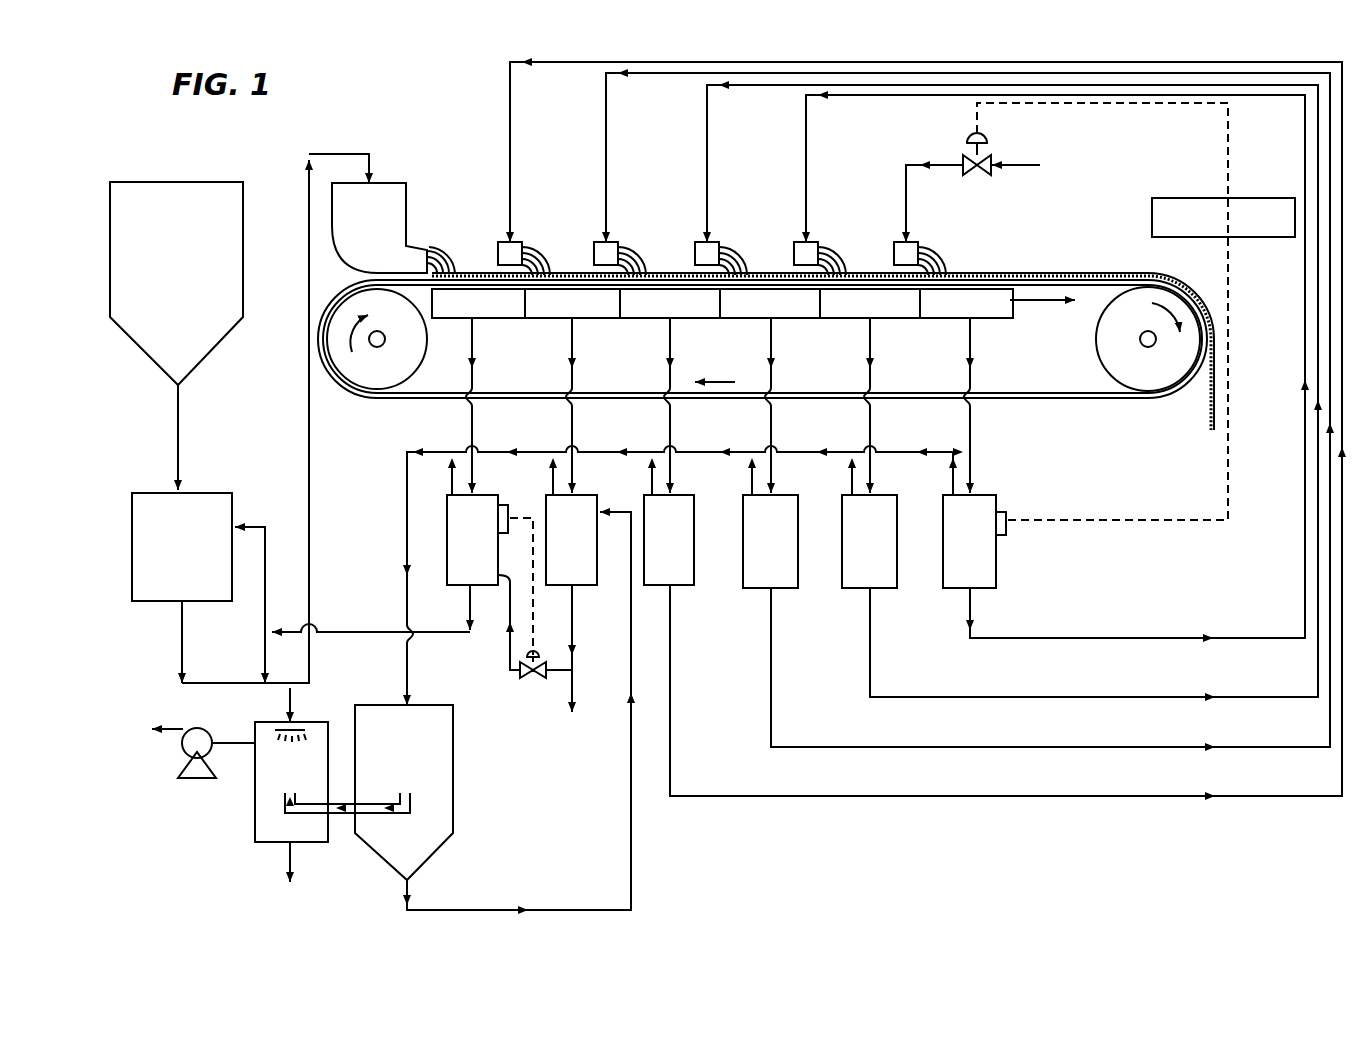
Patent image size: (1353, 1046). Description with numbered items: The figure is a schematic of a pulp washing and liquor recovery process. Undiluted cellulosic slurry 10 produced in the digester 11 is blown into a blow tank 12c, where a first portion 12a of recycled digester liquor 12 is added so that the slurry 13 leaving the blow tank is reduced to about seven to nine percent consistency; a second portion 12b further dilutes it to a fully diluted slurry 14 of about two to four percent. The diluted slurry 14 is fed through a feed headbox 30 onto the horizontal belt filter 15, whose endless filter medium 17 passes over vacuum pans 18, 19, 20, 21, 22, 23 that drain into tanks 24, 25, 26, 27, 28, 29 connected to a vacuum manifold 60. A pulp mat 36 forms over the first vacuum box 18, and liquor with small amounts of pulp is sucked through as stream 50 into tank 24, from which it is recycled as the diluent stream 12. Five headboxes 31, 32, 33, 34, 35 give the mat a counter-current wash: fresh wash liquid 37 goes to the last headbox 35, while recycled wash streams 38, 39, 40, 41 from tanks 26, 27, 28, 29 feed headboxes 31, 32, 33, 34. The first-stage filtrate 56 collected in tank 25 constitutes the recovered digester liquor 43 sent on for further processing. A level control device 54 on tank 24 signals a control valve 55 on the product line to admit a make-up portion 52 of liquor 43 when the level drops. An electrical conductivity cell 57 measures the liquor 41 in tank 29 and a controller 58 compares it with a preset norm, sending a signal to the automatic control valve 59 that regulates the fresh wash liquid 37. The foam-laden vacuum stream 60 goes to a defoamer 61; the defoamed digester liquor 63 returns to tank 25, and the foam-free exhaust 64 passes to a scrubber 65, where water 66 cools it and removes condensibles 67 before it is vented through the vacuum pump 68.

The cellulosic slurry 10 is at (178, 415).
The digester 11 is at (176, 283).
The recycled digester liquor 12 is at (375, 636).
The first portion of recycle diluent 12a is at (262, 520).
The second portion of recycle diluent 12b is at (264, 673).
The blow tank 12c is at (182, 547).
The slurry leaving the blow tank 13 is at (182, 645).
The fully diluted slurry 14 is at (326, 152).
The horizontal belt filter 15 is at (350, 392).
The endless filter medium 17 is at (352, 295).
The first vacuum box 18 is at (478, 303).
The vacuum pan 19 is at (572, 303).
The vacuum pan 20 is at (670, 303).
The vacuum pan 21 is at (770, 303).
The vacuum pan 22 is at (870, 303).
The vacuum pan 23 is at (966, 303).
The tank 24 is at (472, 562).
The tank 25 is at (571, 540).
The tank 26 is at (669, 540).
The tank 27 is at (770, 541).
The tank 28 is at (869, 541).
The tank 29 is at (969, 541).
The feed headbox 30 is at (393, 228).
The headbox 31 is at (524, 258).
The headbox 32 is at (620, 258).
The headbox 33 is at (721, 258).
The headbox 34 is at (820, 258).
The headbox 35 is at (920, 258).
The pulp mat 36 is at (459, 270).
The fresh wash liquid 37 is at (1038, 199).
The recycled wash stream 38 is at (670, 350).
The recycled wash stream 39 is at (771, 348).
The recycled wash stream 40 is at (870, 348).
The recycled wash stream 41 is at (970, 348).
The recovered digester liquor 43 is at (556, 696).
The stream 50 is at (472, 346).
The make-up portion of recovered digester liquor 52 is at (507, 667).
The level control device 54 is at (509, 510).
The control valve 55 is at (528, 673).
The filtrate from the first stage 56 is at (572, 348).
The electrical conductivity cell 57 is at (1000, 535).
The controller 58 is at (1223, 217).
The automatic control valve 59 is at (965, 142).
The vacuum stream 60 is at (407, 508).
The defoamer 61 is at (404, 792).
The defoamed digester liquor 63 is at (589, 906).
The foam-free vacuum exhaust 64 is at (347, 822).
The scrubber 65 is at (276, 842).
The water 66 is at (295, 705).
The condensibles 67 is at (311, 875).
The vacuum pump 68 is at (175, 773).